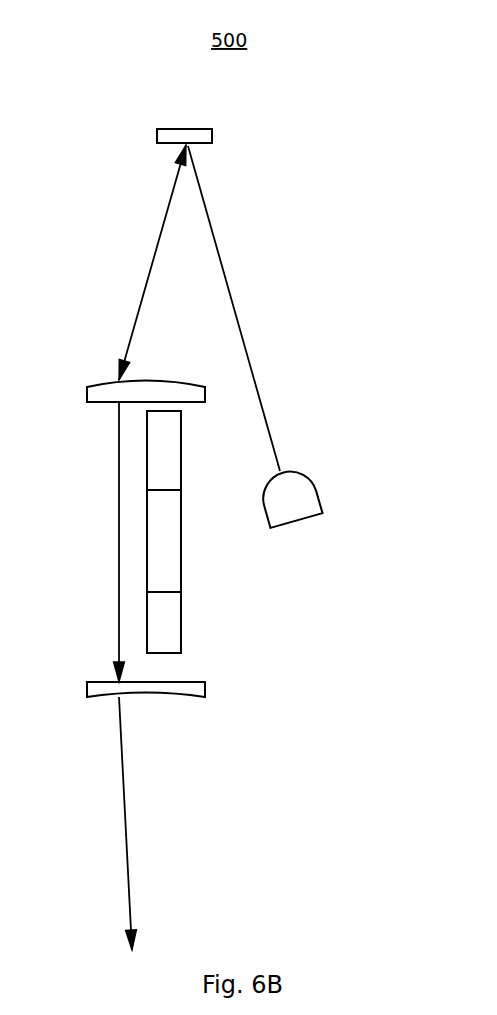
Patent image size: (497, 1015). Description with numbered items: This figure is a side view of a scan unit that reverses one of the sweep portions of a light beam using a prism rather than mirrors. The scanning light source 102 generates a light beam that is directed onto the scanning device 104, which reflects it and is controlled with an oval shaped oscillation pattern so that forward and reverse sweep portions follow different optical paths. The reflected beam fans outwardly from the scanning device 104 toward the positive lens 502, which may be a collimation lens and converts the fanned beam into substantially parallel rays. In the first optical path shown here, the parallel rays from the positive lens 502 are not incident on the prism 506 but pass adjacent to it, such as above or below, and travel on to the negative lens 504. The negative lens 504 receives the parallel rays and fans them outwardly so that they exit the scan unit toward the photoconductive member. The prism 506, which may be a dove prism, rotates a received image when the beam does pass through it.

The scanning device 104 is at (196, 117).
The scanning light source 102 is at (300, 467).
The positive lens 502 is at (97, 403).
The negative lens 504 is at (95, 695).
The prism 506 is at (170, 617).